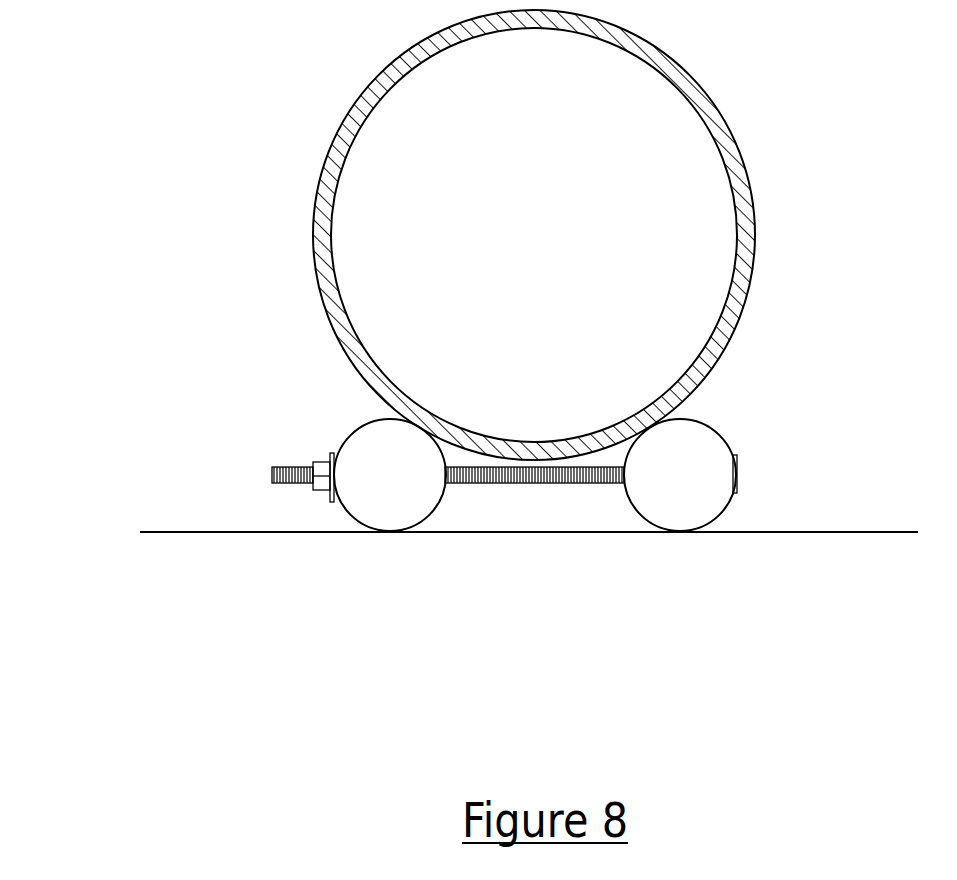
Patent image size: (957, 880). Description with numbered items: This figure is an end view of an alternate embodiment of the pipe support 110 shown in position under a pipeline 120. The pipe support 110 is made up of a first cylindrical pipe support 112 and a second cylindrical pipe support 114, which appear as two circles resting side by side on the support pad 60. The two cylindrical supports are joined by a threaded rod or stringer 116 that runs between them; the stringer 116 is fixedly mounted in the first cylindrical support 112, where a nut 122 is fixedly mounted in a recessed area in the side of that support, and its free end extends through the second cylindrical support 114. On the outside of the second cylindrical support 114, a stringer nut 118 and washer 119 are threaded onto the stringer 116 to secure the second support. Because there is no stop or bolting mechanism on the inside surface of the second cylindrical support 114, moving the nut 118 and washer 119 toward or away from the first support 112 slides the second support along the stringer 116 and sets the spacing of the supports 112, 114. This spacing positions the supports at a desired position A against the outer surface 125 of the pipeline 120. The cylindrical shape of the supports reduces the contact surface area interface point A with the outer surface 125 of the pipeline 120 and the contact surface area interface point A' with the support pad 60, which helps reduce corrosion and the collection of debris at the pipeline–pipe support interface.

The support pad 60 is at (240, 532).
The pipe support 110 is at (530, 568).
The first cylindrical pipe support 112 is at (700, 508).
The second cylindrical pipe support 114 is at (365, 496).
The threaded rod or stringer 116 is at (487, 483).
The stringer nut 118 is at (313, 490).
The washer 119 is at (331, 498).
The pipeline 120 is at (616, 235).
The nut 122 is at (738, 455).
The outer surface of the pipeline 125 is at (750, 175).
The contact surface area interface point A is at (532, 392).
The contact surface area interface point A' is at (549, 630).